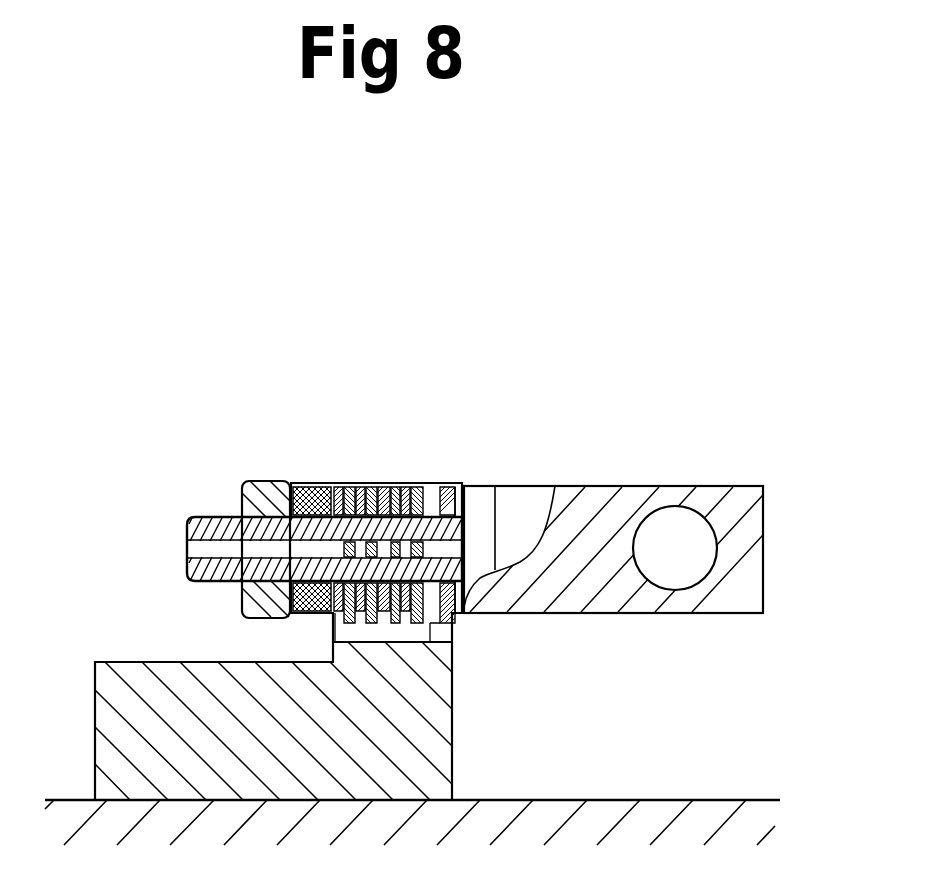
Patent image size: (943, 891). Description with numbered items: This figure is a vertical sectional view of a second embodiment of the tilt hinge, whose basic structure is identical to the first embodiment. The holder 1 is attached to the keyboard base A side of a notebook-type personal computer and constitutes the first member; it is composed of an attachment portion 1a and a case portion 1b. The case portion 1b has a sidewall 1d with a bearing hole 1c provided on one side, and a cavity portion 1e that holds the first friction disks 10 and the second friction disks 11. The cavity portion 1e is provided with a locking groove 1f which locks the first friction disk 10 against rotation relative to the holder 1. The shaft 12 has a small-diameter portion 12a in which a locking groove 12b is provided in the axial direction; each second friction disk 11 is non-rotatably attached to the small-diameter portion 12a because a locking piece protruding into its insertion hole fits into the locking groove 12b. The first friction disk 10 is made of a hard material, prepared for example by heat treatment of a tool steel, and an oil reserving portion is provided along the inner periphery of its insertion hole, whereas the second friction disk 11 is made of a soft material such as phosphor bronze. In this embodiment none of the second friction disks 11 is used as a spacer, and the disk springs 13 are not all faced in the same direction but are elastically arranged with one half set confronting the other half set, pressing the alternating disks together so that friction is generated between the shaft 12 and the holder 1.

The holder 1 is at (475, 723).
The attachment portion 1a is at (112, 702).
The case portion 1b is at (455, 483).
The bearing hole 1c is at (463, 533).
The sidewall 1d is at (433, 628).
The cavity portion 1e is at (393, 483).
The locking groove 1f is at (333, 633).
The first friction disk 10 is at (350, 483).
The second friction disk 11 is at (332, 483).
The shaft 12 is at (638, 465).
The small-diameter portion 12a is at (203, 522).
The locking groove 12b is at (187, 547).
The disk springs 13 is at (320, 485).
The keyboard base A is at (691, 781).